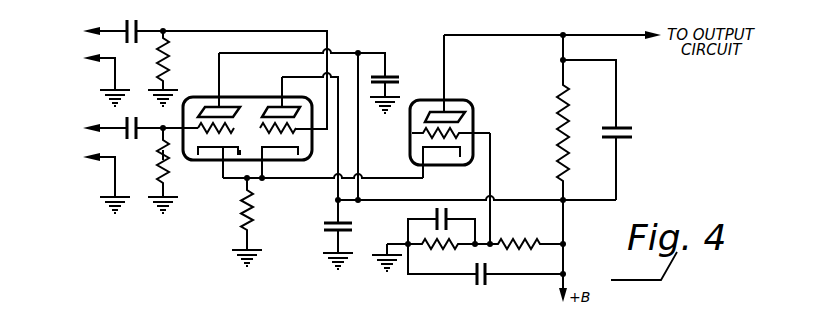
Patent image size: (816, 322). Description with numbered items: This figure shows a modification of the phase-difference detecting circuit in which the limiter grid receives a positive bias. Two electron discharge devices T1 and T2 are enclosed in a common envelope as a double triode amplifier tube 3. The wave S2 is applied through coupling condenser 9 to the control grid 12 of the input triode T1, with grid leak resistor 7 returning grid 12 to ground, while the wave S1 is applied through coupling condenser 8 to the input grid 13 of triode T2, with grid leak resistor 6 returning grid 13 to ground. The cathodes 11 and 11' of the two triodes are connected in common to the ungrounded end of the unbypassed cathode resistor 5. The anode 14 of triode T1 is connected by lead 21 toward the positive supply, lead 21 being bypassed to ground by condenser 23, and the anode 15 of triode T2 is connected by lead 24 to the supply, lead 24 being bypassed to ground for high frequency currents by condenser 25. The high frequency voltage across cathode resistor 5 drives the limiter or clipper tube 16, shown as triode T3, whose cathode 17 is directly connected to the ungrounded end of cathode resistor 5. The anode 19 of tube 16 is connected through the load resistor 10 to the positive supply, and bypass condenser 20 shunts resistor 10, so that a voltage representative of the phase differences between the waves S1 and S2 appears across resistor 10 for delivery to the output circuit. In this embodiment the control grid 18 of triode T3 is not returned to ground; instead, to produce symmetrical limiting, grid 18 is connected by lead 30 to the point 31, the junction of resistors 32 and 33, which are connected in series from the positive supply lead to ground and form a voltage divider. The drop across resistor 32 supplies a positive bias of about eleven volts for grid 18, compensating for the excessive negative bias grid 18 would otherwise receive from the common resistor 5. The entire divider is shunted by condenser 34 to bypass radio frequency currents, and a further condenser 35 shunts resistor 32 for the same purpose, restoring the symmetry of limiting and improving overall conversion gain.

The input wave S1 is at (86, 66).
The input wave S2 is at (86, 168).
The double triode amplifier tube 3 is at (171, 194).
The cathode resistor 5 is at (238, 211).
The grid leak resistor 6 is at (173, 62).
The grid leak resistor 7 is at (148, 158).
The coupling condenser 8 is at (123, 43).
The coupling condenser 9 is at (125, 146).
The load resistor 10 is at (561, 157).
The cathode 11 is at (215, 178).
The cathode 11' is at (280, 178).
The control grid 12 is at (237, 124).
The input grid 13 is at (299, 131).
The anode 14 is at (245, 82).
The anode 15 is at (300, 96).
The limiter tube 16 is at (420, 164).
The cathode 17 is at (420, 148).
The control grid 18 is at (460, 133).
The anode 19 is at (448, 108).
The bypass condenser 20 is at (639, 128).
The lead 21 is at (342, 52).
The condenser 23 is at (427, 74).
The lead 24 is at (334, 152).
The condenser 25 is at (324, 230).
The lead 30 is at (493, 187).
The junction point 31 is at (492, 238).
The resistor 32 is at (454, 257).
The resistor 33 is at (527, 238).
The condenser 34 is at (488, 276).
The bypass capacitor 35 is at (433, 213).
The input triode T1 is at (201, 98).
The triode T2 is at (304, 168).
The triode T3 is at (468, 113).